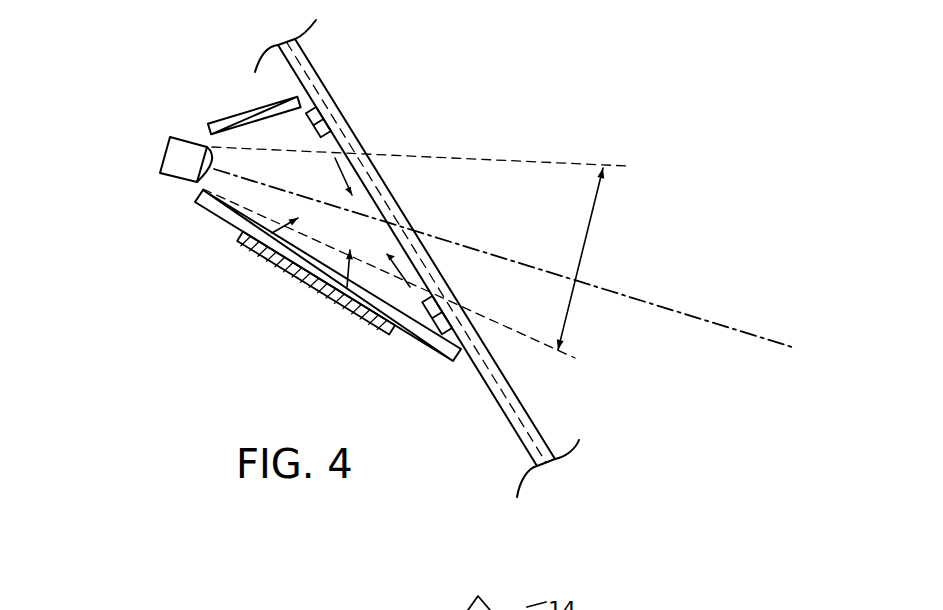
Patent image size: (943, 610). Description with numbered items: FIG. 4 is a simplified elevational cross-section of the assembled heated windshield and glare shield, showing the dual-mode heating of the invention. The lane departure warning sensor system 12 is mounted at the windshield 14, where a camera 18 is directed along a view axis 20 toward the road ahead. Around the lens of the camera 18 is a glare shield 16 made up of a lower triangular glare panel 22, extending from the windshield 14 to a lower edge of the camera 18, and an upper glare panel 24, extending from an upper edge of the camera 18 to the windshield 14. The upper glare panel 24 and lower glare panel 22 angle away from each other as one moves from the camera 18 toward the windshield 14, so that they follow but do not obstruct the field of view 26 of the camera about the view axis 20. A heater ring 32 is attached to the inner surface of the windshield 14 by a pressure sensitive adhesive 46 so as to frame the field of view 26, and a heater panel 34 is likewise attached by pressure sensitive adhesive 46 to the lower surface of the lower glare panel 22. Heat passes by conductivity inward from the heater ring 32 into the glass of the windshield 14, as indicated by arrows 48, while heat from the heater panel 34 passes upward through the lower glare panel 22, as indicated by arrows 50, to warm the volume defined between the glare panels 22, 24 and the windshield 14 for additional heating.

The lane departure warning sensor system 12 is at (120, 120).
The windshield 14 is at (308, 75).
The glare shield 16 is at (188, 86).
The camera 18 is at (172, 151).
The view axis 20 is at (652, 303).
The lower glare panel 22 is at (410, 338).
The upper glare panel 24 is at (246, 118).
The field of view 26 is at (586, 240).
The heater ring 32 is at (312, 127).
The heater panel 34 is at (303, 286).
The pressure sensitive adhesive 46 is at (356, 149).
The arrows 48 is at (411, 286).
The arrows 50 is at (349, 286).